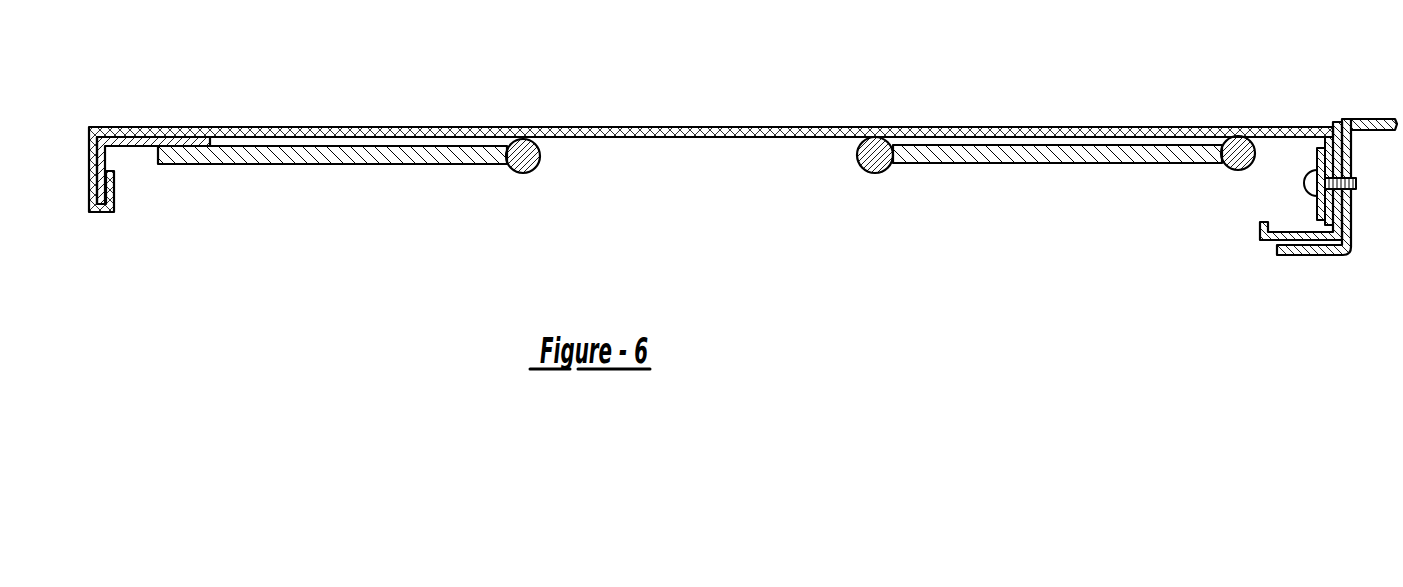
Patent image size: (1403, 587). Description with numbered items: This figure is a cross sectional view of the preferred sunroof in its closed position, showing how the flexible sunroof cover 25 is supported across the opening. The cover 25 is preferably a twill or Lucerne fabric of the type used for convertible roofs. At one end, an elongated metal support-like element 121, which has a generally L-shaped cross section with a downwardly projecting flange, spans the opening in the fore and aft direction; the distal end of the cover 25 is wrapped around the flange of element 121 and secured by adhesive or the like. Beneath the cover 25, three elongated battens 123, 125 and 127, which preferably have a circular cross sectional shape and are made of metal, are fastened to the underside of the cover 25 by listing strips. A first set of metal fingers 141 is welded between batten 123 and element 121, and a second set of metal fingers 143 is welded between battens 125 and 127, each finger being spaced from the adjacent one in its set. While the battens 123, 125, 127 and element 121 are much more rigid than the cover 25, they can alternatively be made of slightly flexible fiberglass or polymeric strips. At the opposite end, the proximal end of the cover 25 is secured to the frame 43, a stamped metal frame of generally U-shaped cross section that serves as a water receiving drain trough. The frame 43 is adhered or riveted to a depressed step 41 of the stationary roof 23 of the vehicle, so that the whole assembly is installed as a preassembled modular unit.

The flexible sunroof cover 25 is at (650, 127).
The elongated metal support-like element 121 is at (142, 148).
The first set of metal fingers 141 is at (355, 160).
The batten 123 is at (530, 155).
The batten 125 is at (877, 163).
The second set of metal fingers 143 is at (1043, 158).
The batten 127 is at (1243, 163).
The depressed step 41 is at (1348, 223).
The frame 43 is at (1272, 252).
The stationary roof 23 is at (1373, 118).